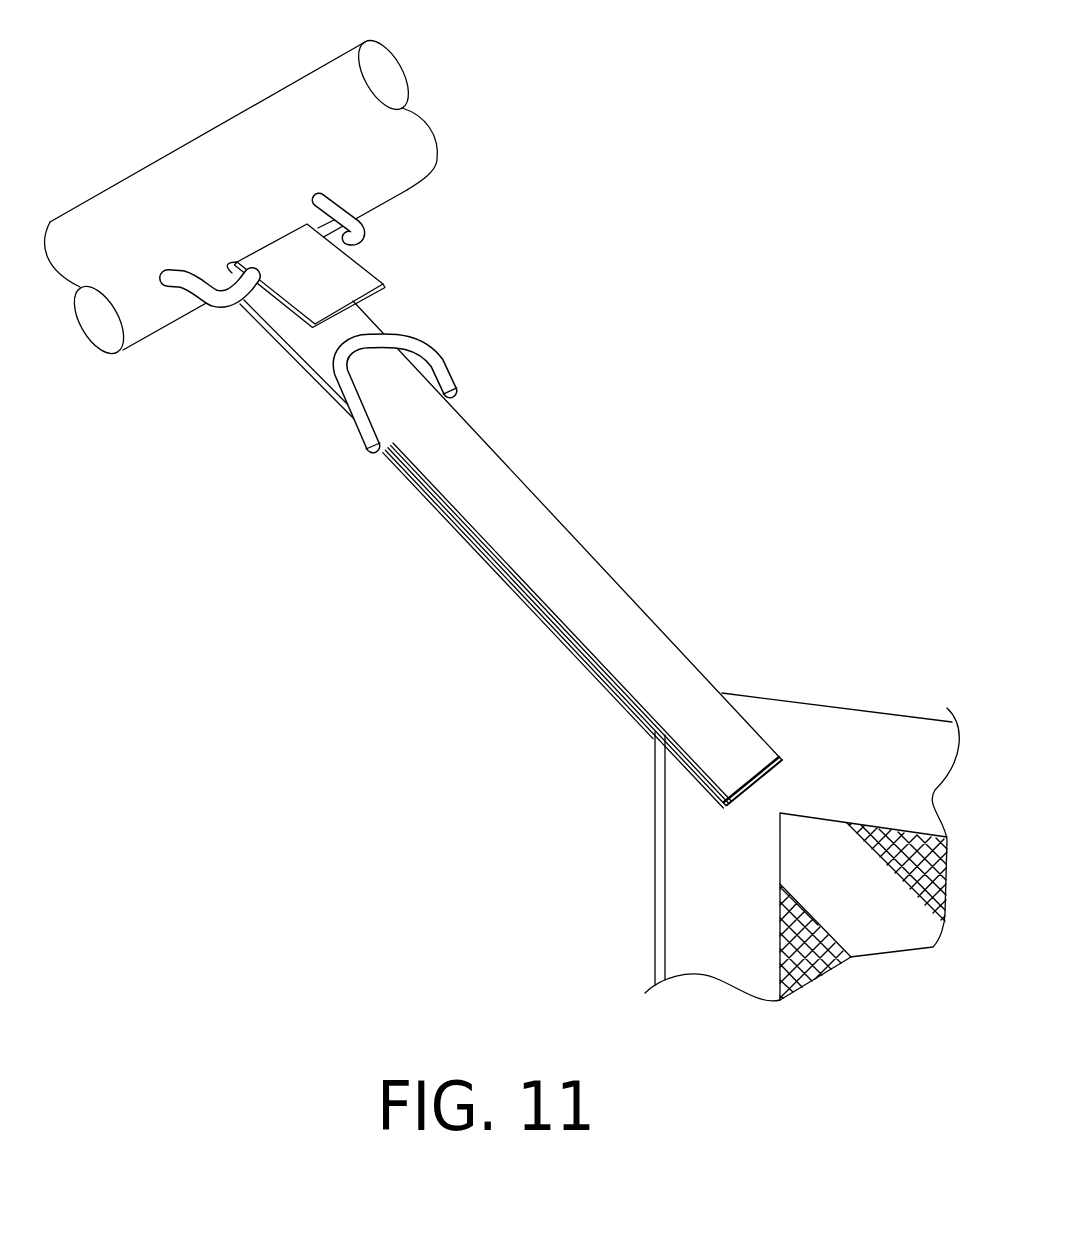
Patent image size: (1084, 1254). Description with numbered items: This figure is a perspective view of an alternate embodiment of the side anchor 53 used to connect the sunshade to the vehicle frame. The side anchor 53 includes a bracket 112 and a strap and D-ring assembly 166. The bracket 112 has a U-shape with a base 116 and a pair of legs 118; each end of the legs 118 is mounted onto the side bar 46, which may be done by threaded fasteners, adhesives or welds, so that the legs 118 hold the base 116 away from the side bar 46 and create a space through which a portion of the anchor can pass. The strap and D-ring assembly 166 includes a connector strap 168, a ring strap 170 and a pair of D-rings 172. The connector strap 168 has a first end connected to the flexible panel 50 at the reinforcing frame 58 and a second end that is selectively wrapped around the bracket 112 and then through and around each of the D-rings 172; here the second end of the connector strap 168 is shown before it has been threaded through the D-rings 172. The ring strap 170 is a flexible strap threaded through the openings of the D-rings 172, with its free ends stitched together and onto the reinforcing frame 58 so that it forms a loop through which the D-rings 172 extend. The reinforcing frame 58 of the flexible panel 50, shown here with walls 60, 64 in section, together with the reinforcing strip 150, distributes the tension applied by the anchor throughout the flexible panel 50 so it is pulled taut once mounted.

The side bar 46 is at (203, 134).
The legs 118 is at (317, 192).
The base 116 is at (352, 235).
The bracket 112 is at (209, 323).
The connector strap 168 is at (310, 383).
The ring strap 170 is at (632, 618).
The strap and D-ring assembly 166 is at (487, 395).
The D-rings 172 is at (413, 333).
The side anchor 53 is at (652, 456).
The reinforcing frame 58 is at (752, 822).
The top panel wall 60 is at (871, 720).
The side panel wall 64 is at (675, 918).
The flexible panel 50 is at (635, 846).
The reinforcing strip 150 is at (892, 937).